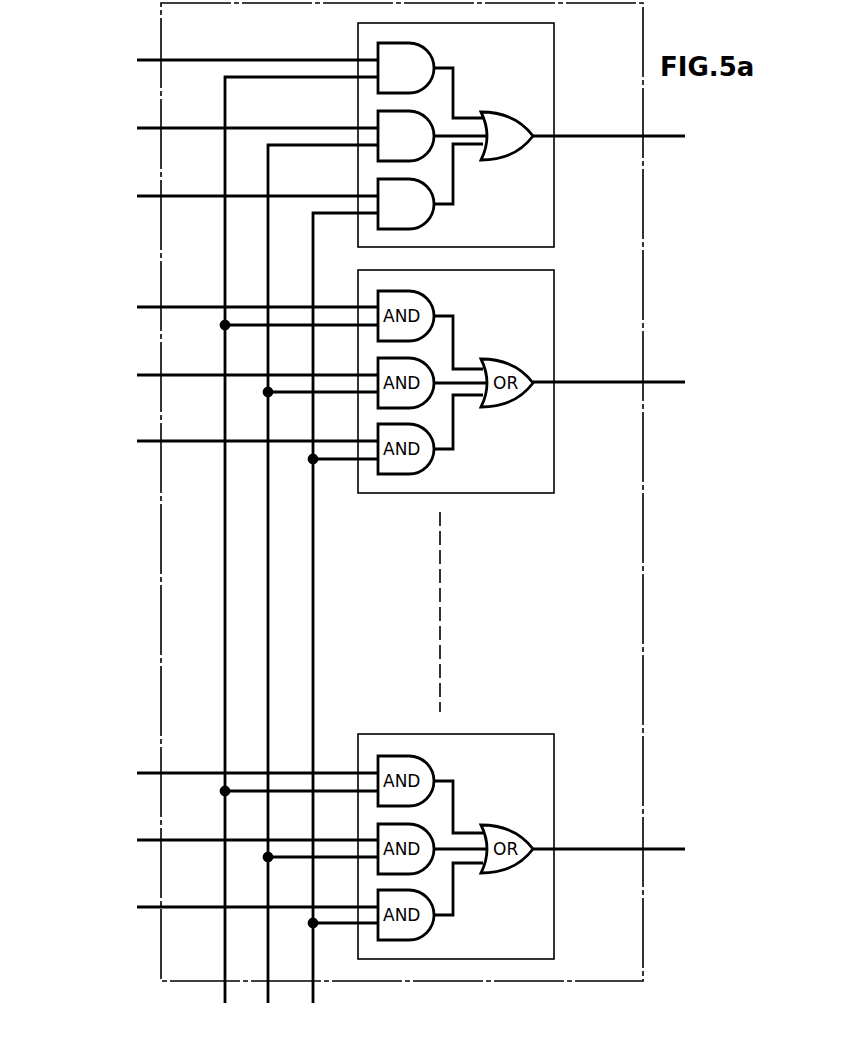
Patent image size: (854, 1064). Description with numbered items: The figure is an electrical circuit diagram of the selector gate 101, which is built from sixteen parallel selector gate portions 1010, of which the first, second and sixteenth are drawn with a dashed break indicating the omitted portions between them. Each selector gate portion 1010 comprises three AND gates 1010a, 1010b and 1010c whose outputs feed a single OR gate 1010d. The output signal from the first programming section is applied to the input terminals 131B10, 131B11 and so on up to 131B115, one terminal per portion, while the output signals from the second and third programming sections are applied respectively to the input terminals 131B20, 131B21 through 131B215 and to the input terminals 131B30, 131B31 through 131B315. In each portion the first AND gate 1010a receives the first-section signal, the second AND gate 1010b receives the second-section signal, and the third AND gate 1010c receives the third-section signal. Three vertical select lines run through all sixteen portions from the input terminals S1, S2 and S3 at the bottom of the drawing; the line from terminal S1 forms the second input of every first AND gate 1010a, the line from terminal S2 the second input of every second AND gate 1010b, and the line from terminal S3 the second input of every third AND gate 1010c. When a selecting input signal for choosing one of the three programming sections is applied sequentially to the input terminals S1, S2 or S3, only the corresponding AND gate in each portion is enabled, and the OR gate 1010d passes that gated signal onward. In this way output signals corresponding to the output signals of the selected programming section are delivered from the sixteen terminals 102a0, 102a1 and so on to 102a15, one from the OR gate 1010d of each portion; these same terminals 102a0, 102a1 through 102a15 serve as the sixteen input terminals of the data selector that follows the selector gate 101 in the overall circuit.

The selector gate 101 is at (645, 48).
The selector gate portion 1010 is at (555, 49).
The AND gate 1010a is at (426, 42).
The AND gate 1010b is at (432, 116).
The AND gate 1010c is at (438, 210).
The OR gate 1010d is at (517, 157).
The output terminal 102a0 is at (641, 138).
The output terminal 102a1 is at (641, 384).
The output terminal 102a15 is at (646, 851).
The input terminal 131B10 is at (214, 65).
The input terminal 131B20 is at (214, 133).
The input terminal 131B30 is at (214, 201).
The input terminal 131B11 is at (214, 312).
The input terminal 131B21 is at (214, 380).
The input terminal 131B31 is at (214, 446).
The input terminal 131B115 is at (214, 778).
The input terminal 131B215 is at (214, 845).
The input terminal 131B315 is at (214, 912).
The input terminal S1 is at (295, 556).
The input terminal S2 is at (317, 590).
The input terminal S3 is at (339, 624).